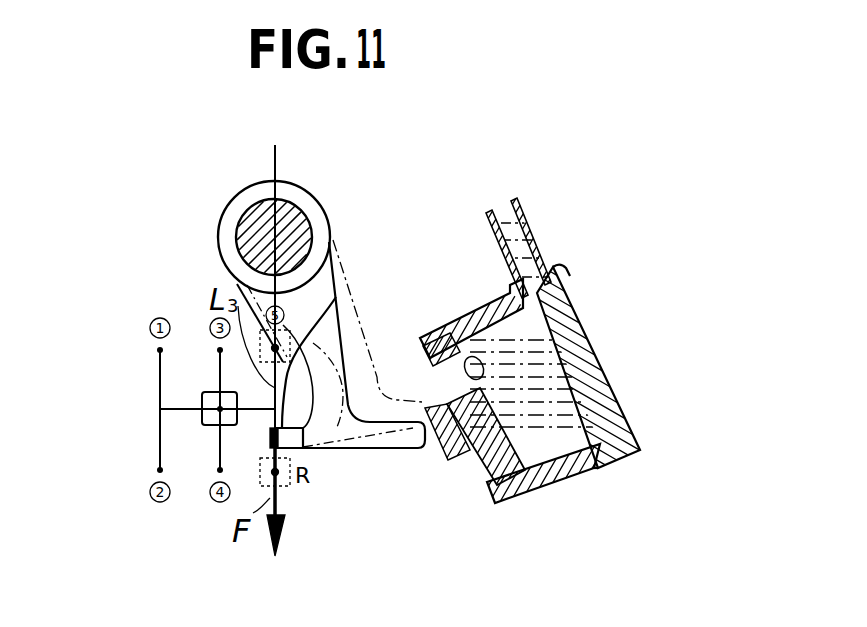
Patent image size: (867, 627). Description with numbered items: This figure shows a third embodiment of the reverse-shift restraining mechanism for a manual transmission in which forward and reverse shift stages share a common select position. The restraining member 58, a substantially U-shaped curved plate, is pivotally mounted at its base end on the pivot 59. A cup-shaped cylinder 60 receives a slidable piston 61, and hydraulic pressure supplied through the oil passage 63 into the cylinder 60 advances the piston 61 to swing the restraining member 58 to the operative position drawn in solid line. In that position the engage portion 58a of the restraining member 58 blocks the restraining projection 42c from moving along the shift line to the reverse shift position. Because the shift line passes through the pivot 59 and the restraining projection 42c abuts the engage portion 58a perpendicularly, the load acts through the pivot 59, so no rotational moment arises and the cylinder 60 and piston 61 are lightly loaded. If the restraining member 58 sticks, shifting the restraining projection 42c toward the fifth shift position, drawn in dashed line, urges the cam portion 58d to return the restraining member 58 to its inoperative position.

The restraining projection 42c is at (205, 395).
The restraining member 58 is at (326, 452).
The engage portion 58a is at (353, 363).
The cam portion 58d is at (341, 290).
The pivot 59 is at (283, 207).
The cylinder 60 is at (470, 312).
The piston 61 is at (450, 455).
The oil passage 63 is at (527, 227).